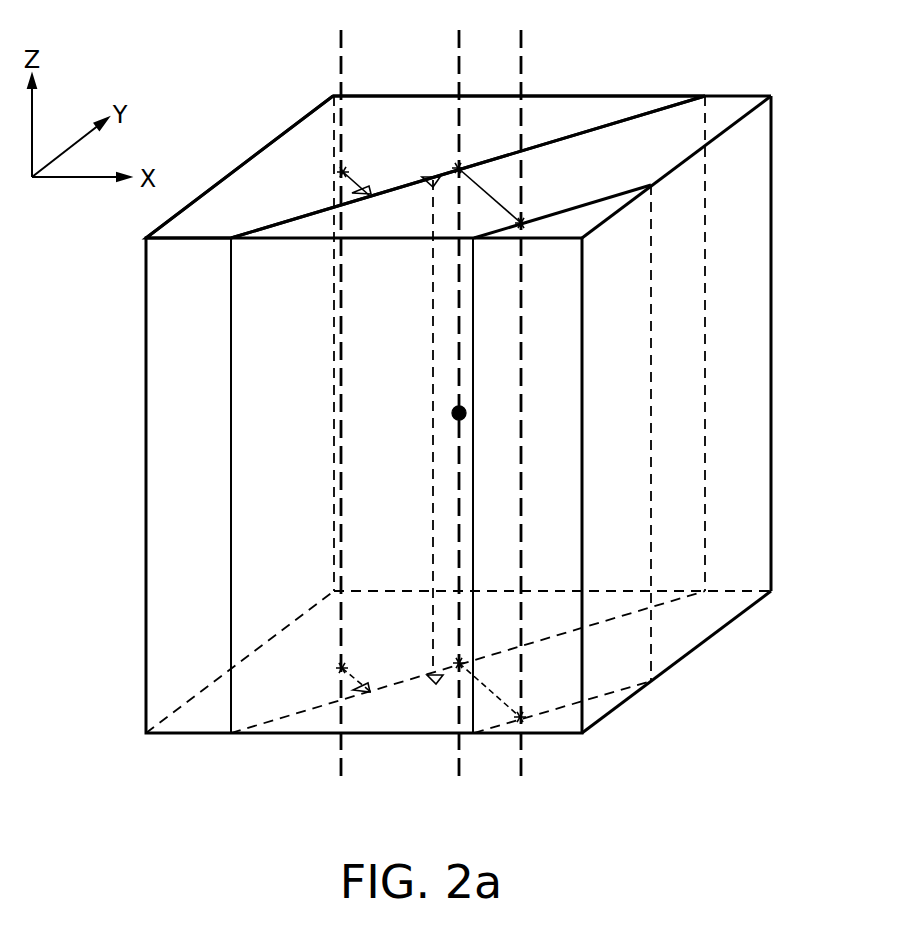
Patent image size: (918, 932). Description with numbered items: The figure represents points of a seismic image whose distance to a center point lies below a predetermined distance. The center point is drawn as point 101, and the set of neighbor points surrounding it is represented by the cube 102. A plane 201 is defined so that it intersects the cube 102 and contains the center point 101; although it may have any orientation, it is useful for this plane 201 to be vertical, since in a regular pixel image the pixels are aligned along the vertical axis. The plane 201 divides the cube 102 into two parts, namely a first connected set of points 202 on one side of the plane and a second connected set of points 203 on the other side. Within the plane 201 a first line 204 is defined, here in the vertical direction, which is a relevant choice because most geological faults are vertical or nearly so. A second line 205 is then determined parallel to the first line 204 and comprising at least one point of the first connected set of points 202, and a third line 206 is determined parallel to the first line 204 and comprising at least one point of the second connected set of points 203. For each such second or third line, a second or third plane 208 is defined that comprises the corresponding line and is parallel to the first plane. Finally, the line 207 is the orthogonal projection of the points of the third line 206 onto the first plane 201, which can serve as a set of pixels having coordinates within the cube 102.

The center point 101 is at (452, 413).
The cube 102 is at (257, 153).
The plane 201 is at (608, 110).
The first connected set of points 202 is at (409, 124).
The second connected set of points 203 is at (676, 145).
The first line 204 is at (458, 618).
The second line 205 is at (341, 638).
The third line 206 is at (522, 667).
The line 207 is at (433, 496).
The second or third plane 208 is at (651, 628).